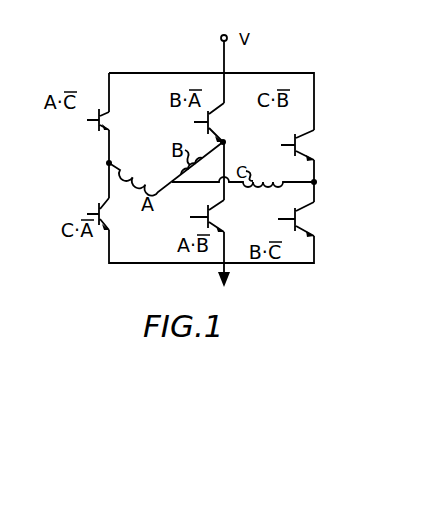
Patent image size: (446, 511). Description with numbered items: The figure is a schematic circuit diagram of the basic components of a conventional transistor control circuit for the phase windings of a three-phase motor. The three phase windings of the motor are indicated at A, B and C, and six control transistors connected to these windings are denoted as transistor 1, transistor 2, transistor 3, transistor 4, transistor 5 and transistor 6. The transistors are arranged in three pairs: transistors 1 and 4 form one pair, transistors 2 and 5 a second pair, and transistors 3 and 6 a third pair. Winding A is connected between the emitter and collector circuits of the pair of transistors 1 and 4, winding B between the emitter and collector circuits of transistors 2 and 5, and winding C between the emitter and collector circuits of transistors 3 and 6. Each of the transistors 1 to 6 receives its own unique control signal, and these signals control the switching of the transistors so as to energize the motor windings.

The control transistor 1 is at (112, 126).
The control transistor 2 is at (221, 133).
The control transistor 3 is at (310, 153).
The control transistor 4 is at (111, 228).
The control transistor 5 is at (216, 224).
The control transistor 6 is at (310, 222).